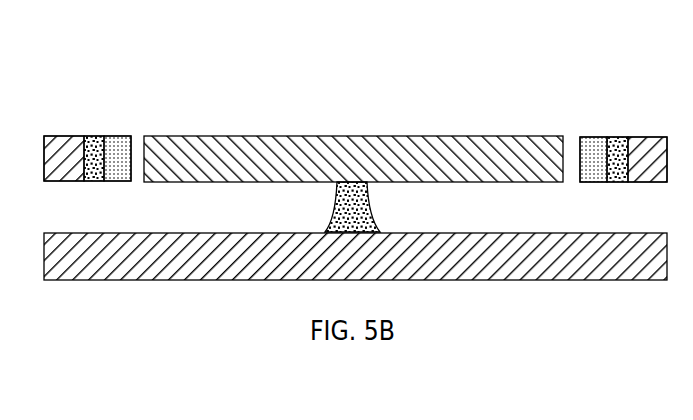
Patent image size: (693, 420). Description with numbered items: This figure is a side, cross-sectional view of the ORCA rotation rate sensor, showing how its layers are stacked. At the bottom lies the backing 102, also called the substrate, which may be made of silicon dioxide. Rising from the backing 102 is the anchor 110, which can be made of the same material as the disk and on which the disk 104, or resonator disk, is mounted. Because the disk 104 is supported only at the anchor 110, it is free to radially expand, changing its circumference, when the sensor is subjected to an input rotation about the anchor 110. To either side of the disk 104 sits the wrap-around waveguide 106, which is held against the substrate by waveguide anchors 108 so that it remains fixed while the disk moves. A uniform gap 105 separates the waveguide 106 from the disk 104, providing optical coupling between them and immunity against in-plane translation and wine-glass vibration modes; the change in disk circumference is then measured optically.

The backing 102 is at (70, 135).
The disk 104 is at (203, 182).
The uniform gap 105 is at (575, 135).
The waveguide 106 is at (112, 181).
The waveguide anchors 108 is at (88, 181).
The anchor 110 is at (337, 191).